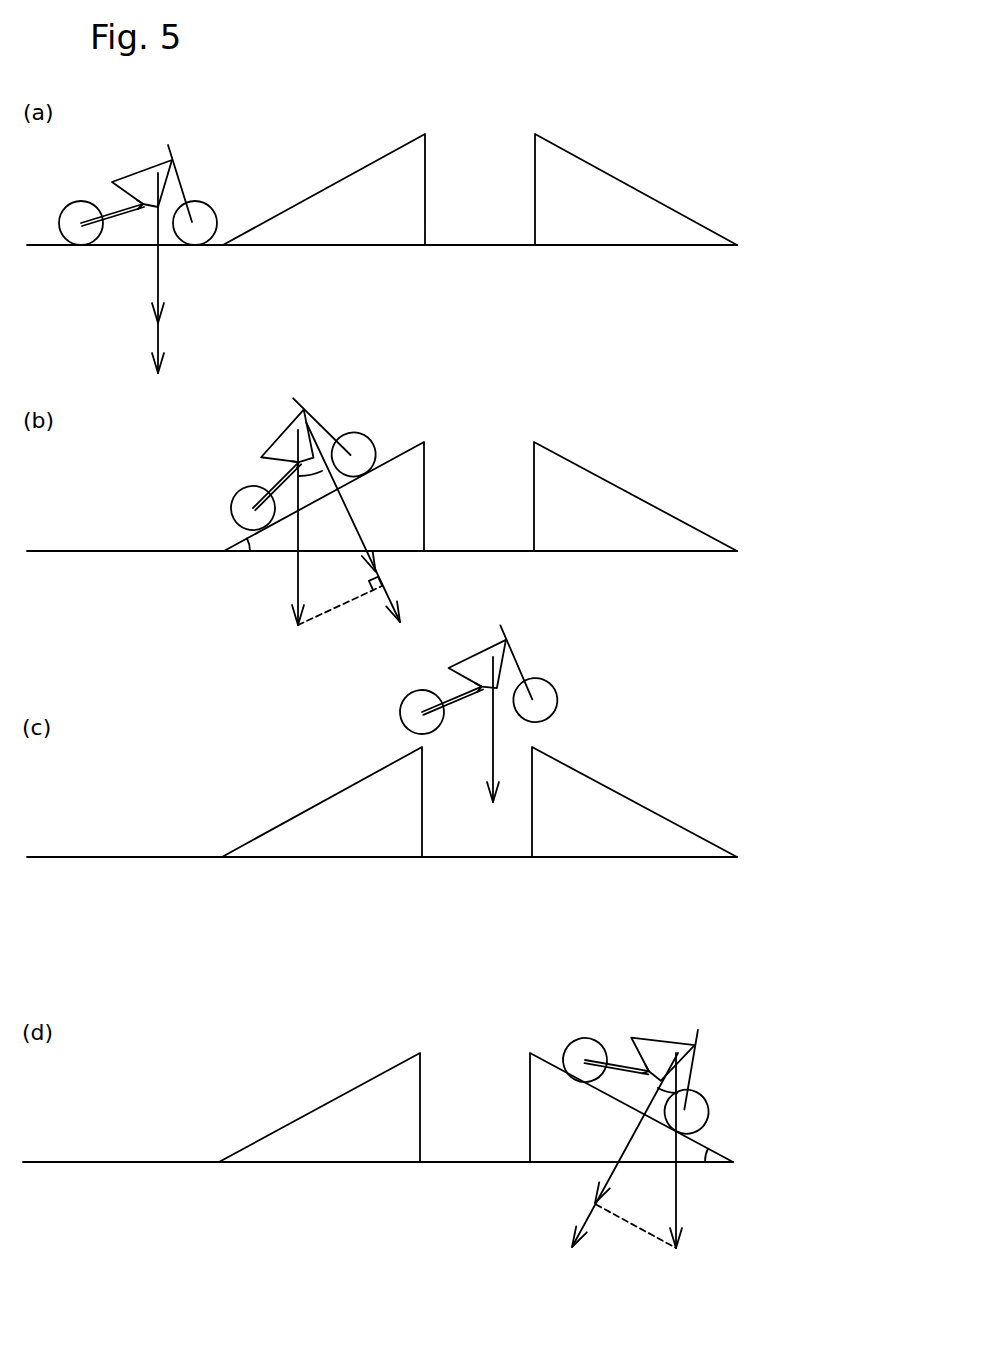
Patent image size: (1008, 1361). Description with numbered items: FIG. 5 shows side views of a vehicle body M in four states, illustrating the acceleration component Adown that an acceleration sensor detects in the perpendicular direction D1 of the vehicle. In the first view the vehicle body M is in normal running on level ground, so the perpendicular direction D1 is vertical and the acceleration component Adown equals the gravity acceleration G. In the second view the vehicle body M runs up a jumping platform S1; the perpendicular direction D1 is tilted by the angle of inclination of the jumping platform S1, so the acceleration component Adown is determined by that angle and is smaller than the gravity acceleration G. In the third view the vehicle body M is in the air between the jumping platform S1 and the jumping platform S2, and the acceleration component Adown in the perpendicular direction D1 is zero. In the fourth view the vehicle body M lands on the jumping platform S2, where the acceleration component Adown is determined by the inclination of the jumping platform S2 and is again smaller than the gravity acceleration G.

The vehicle body M is at (187, 185).
The jumping platform S1 is at (427, 180).
The jumping platform S2 is at (532, 213).
The acceleration component Adown is at (160, 290).
The perpendicular direction D1 is at (359, 822).
The gravity acceleration G is at (298, 565).